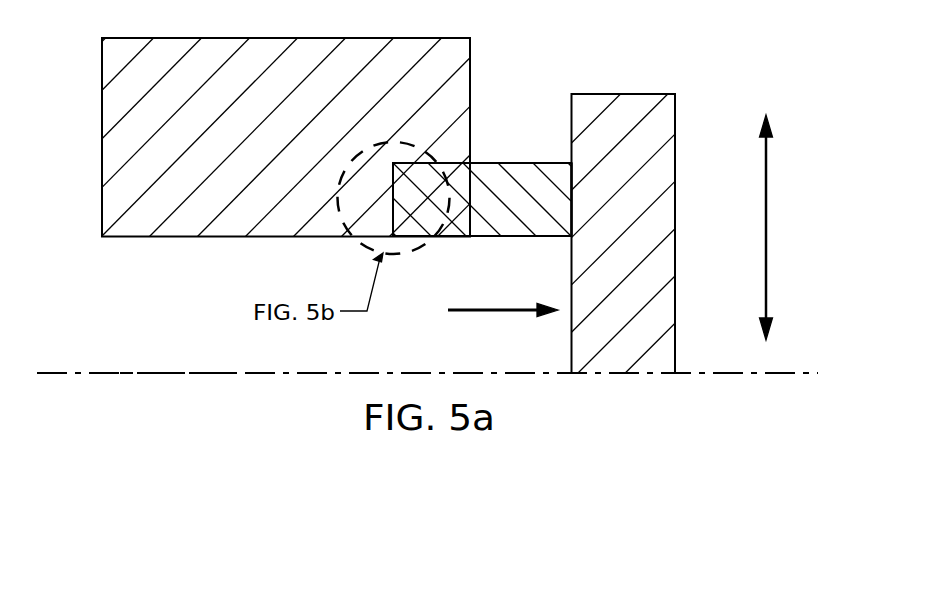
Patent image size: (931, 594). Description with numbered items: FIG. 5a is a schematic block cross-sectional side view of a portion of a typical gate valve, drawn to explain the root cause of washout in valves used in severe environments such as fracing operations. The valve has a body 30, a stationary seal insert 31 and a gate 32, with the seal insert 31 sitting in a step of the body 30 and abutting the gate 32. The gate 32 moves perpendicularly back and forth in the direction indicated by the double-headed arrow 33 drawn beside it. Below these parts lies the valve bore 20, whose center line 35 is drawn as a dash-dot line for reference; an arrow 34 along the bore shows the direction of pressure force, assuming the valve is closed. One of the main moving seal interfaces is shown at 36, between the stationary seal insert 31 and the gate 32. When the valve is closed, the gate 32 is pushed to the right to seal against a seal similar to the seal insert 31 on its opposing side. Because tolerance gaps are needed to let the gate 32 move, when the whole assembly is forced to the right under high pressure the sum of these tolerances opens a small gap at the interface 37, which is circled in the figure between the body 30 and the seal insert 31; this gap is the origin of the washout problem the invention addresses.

The valve bore 20 is at (174, 352).
The body 30 is at (108, 112).
The seal insert 31 is at (517, 168).
The gate 32 is at (665, 167).
The arrow 33 is at (768, 228).
The arrow 34 is at (490, 314).
The center line 35 is at (803, 372).
The moving seal interface 36 is at (570, 214).
The interface 37 is at (393, 220).